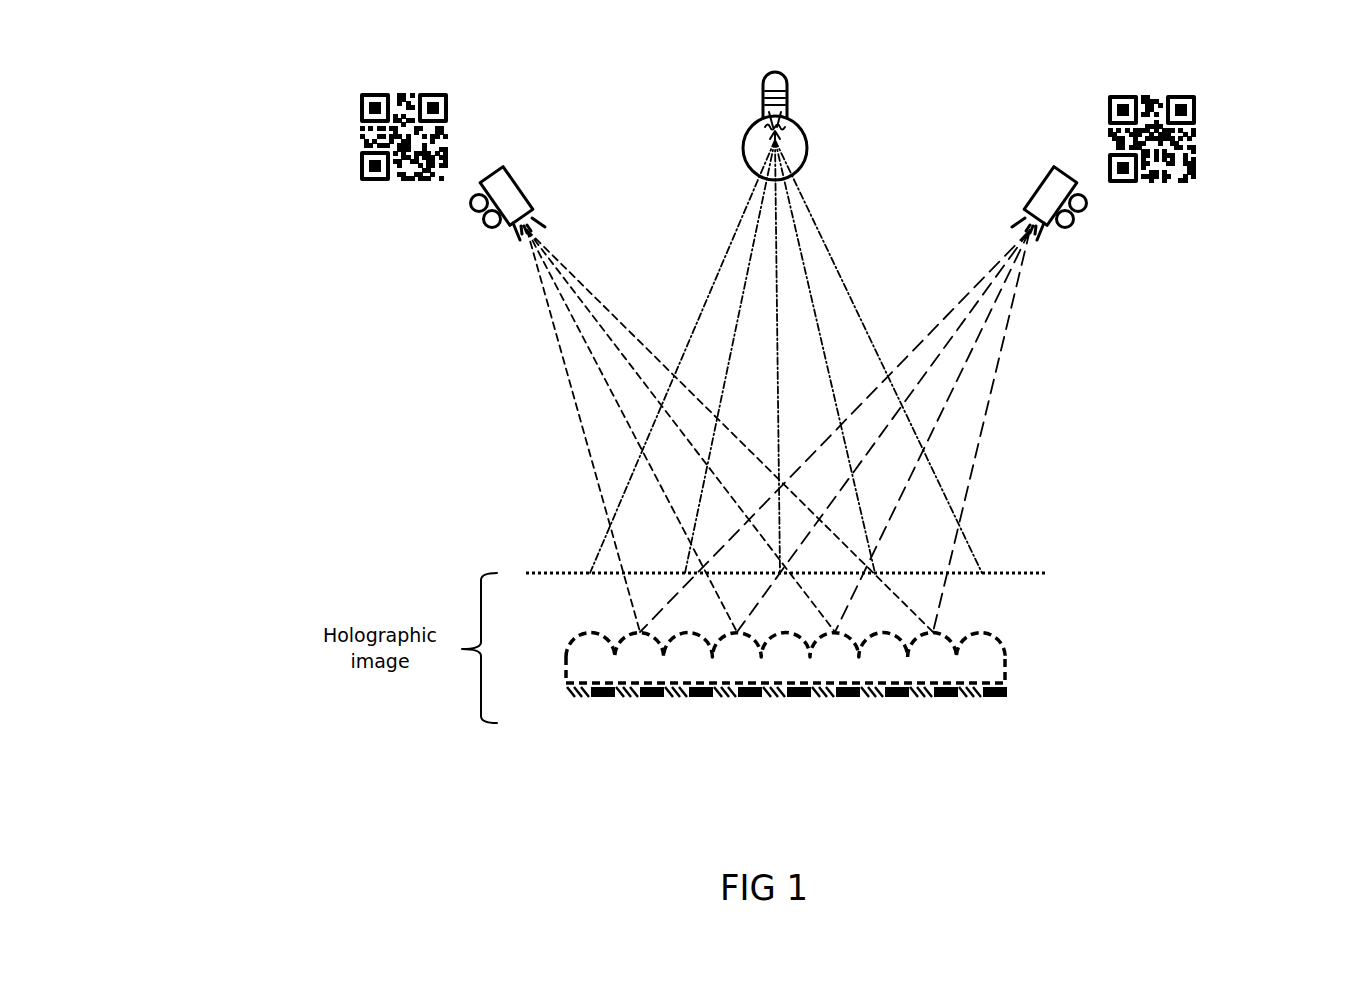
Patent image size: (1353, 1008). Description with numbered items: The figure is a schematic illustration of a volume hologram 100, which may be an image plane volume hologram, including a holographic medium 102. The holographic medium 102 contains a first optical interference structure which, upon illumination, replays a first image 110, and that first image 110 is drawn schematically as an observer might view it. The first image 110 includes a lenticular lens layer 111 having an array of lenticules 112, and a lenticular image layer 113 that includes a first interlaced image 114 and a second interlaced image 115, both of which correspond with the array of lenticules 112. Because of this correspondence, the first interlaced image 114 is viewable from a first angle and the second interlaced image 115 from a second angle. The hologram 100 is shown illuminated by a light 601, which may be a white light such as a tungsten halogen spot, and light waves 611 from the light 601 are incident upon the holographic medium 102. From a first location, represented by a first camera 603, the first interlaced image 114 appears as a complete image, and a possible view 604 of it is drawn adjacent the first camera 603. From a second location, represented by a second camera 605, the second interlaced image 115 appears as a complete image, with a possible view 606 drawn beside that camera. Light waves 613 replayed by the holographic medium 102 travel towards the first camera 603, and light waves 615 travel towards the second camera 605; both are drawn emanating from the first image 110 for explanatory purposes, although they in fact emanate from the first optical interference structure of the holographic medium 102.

The volume hologram 100 is at (320, 262).
The holographic medium 102 is at (834, 526).
The first image 110 is at (1168, 545).
The lenticular lens layer 111 is at (859, 650).
The array of lenticules 112 is at (846, 610).
The lenticular image layer 113 is at (858, 744).
The first interlaced image 114 is at (823, 730).
The second interlaced image 115 is at (799, 763).
The light 601 is at (834, 109).
The first camera 603 is at (551, 164).
The view of the complete image of the first interlaced image 604 is at (460, 102).
The second camera 605 is at (1022, 174).
The view of the complete image of the second interlaced image 606 is at (1209, 113).
The light waves 611 is at (786, 356).
The light waves 613 is at (674, 431).
The light waves 615 is at (896, 431).